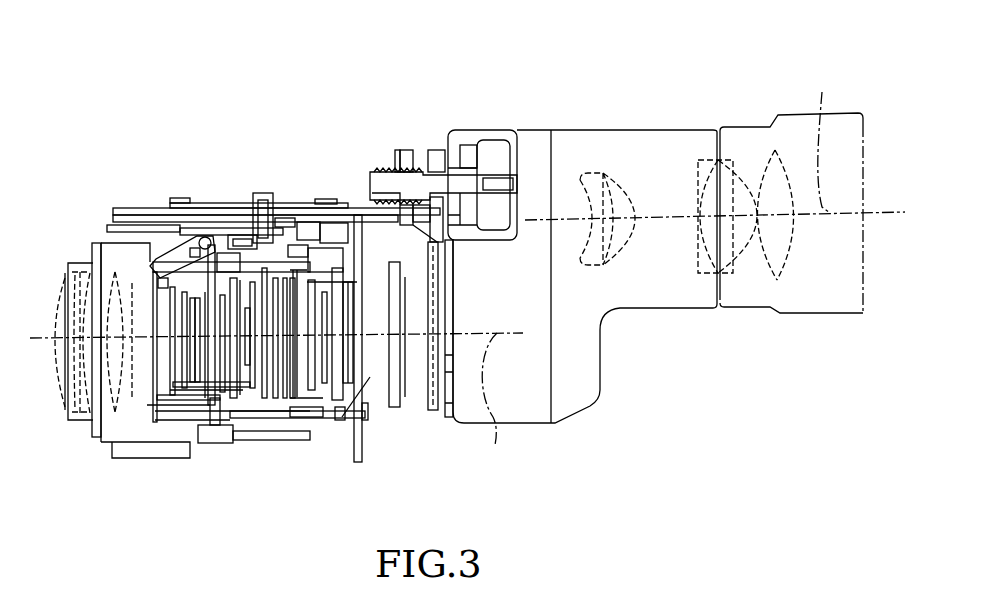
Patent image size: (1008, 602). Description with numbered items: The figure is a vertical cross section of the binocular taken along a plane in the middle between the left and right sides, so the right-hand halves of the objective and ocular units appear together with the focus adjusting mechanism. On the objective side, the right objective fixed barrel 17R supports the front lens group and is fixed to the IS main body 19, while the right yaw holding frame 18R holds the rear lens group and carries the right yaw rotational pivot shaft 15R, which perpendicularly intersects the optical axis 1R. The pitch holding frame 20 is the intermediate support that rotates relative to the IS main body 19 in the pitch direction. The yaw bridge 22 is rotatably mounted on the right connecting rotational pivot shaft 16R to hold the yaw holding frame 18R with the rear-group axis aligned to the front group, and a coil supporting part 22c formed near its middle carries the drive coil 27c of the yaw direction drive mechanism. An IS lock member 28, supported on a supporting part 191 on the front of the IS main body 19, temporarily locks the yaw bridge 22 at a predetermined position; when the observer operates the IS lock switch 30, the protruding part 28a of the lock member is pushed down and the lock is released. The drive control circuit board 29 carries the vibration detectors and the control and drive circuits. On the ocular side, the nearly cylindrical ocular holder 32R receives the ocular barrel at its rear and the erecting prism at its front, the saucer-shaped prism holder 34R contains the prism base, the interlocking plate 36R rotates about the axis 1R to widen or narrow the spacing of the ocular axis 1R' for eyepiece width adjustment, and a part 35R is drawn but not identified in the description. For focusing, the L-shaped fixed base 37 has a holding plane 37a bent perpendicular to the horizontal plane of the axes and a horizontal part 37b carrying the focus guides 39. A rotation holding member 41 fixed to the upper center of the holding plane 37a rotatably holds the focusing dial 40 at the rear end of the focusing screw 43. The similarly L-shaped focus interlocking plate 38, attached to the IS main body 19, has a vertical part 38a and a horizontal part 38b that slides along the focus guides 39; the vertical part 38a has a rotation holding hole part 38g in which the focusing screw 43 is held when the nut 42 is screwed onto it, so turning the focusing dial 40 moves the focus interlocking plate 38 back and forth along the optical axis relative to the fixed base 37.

The optical axis 1R is at (493, 402).
The optical axis 1R' is at (820, 142).
The yaw rotational pivot shaft 15R is at (260, 460).
The connecting rotational pivot shaft 16R is at (133, 470).
The objective fixed barrel 17R is at (157, 468).
The yaw holding frame 18R is at (348, 415).
The IS main body 19 is at (305, 447).
The pitch holding frame 20 is at (279, 455).
The yaw bridge 22 is at (188, 462).
The coil supporting part 22c is at (190, 343).
The drive coil 27c is at (210, 445).
The IS lock member 28 is at (170, 256).
The protruding part 28a is at (235, 205).
The drive control circuit board 29 is at (368, 465).
The IS lock switch 30 is at (261, 193).
The ocular holder 32R is at (577, 403).
The prism holder 34R is at (518, 412).
The right eyepiece housing 35R is at (824, 318).
The interlocking plate 36R is at (418, 408).
The fixed base 37 is at (448, 420).
The holding plane 37a is at (433, 410).
The horizontal part 37b is at (142, 216).
The focus interlocking plate 38 is at (365, 205).
The vertical part 38a is at (409, 150).
The horizontal part 38b is at (302, 205).
The rotation holding hole part 38g is at (413, 225).
The focus guides 39 is at (190, 206).
The focusing dial 40 is at (496, 130).
The rotation holding member 41 is at (437, 150).
The nut 42 is at (397, 150).
The focusing screw 43 is at (472, 180).
The supporting part 191 is at (201, 206).